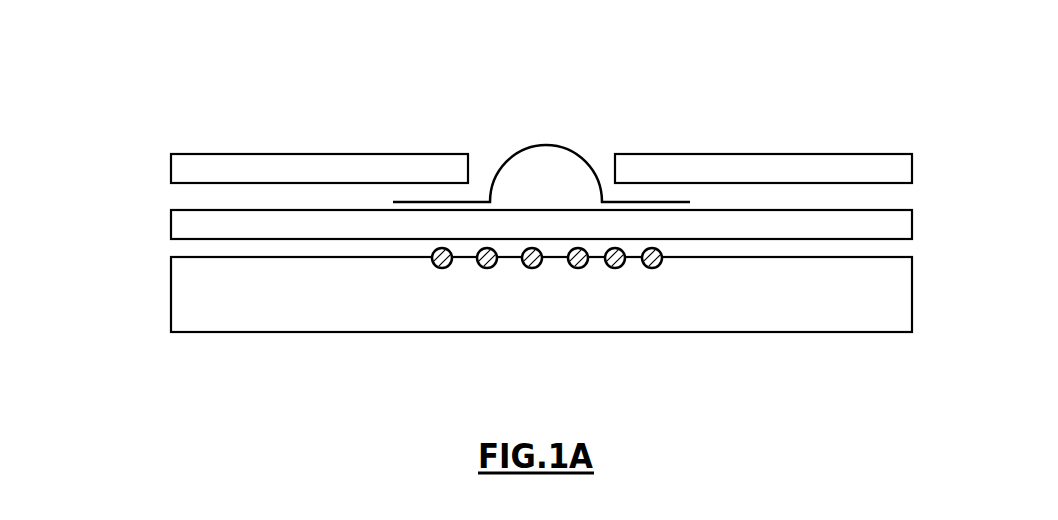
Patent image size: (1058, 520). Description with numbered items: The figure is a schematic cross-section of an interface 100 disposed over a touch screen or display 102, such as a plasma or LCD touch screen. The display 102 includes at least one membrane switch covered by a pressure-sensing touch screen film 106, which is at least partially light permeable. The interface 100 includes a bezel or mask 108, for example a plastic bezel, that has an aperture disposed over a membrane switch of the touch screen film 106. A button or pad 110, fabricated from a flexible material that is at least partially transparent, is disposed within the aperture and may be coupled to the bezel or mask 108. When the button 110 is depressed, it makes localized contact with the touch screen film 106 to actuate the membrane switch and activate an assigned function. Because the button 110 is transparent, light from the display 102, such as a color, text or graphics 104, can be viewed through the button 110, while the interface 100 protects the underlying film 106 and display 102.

The interface 100 is at (142, 177).
The touch screen or display 102 is at (730, 320).
The color, text or graphics 104 is at (433, 267).
The touch screen film 106 is at (913, 228).
The bezel or mask 108 is at (226, 157).
The button or pad 110 is at (568, 148).